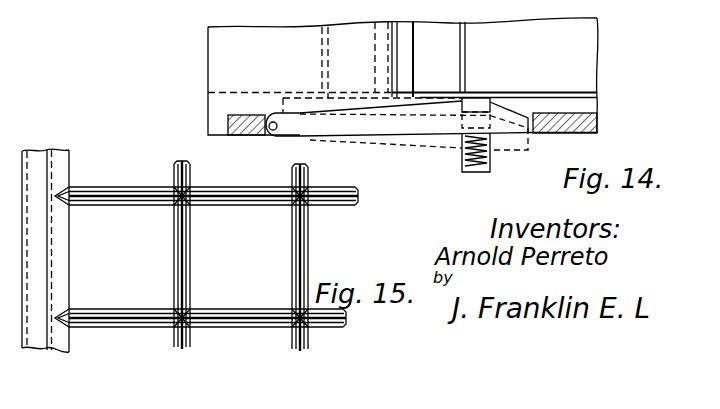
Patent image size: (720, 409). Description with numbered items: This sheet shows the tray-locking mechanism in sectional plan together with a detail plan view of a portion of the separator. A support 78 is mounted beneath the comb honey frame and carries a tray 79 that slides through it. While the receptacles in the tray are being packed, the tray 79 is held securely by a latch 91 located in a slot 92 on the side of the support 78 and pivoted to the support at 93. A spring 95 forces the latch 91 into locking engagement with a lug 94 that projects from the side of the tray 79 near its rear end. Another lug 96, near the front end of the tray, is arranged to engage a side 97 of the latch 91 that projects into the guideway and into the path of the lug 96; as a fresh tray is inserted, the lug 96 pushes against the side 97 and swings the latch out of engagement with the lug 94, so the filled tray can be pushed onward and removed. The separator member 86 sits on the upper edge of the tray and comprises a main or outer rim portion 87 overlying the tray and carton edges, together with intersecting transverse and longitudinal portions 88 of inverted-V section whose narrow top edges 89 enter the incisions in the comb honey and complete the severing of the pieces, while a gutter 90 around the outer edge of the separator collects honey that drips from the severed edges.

In FIG. 14, the support 78 is at (583, 124).
In FIG. 14, the tray 79 is at (577, 95).
In FIG. 15, the separator member 86 is at (206, 179).
In FIG. 15, the main or outer rim portion 87 is at (62, 235).
In FIG. 15, the intersecting transverse and longitudinal portions 88 is at (182, 283).
In FIG. 15, the top edge 89 is at (143, 196).
In FIG. 15, the gutter 90 is at (37, 162).
In FIG. 14, the latch 91 is at (415, 128).
In FIG. 14, the slot 92 is at (531, 122).
In FIG. 14, the pivot 93 is at (273, 131).
In FIG. 14, the lug 94 is at (478, 104).
In FIG. 14, the spring 95 is at (480, 158).
In FIG. 14, the lug 96 is at (293, 104).
In FIG. 14, the side 97 is at (370, 107).